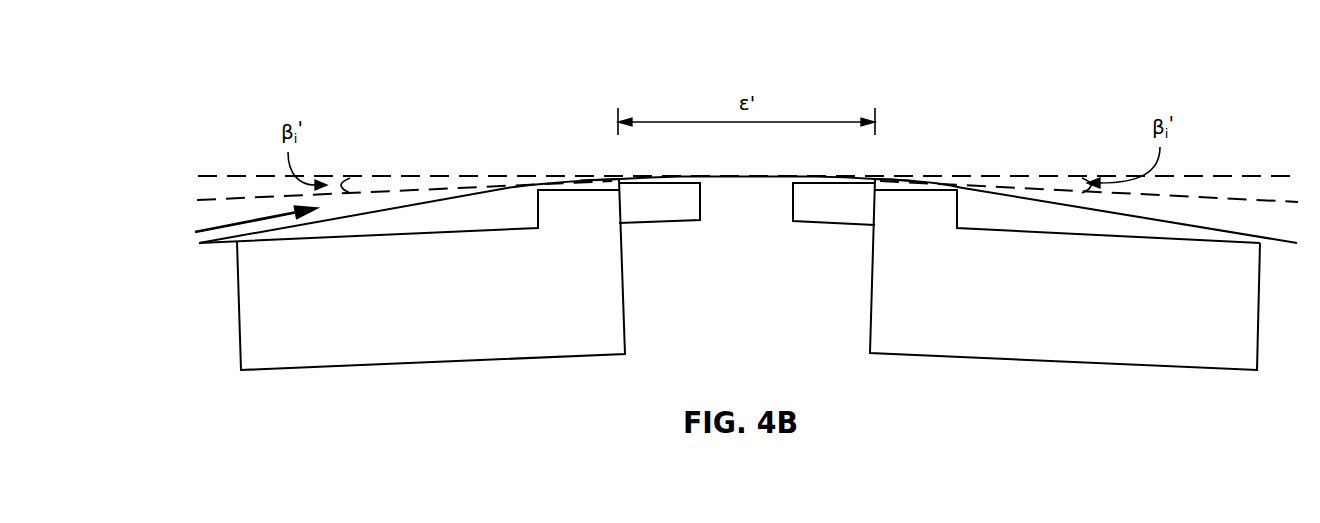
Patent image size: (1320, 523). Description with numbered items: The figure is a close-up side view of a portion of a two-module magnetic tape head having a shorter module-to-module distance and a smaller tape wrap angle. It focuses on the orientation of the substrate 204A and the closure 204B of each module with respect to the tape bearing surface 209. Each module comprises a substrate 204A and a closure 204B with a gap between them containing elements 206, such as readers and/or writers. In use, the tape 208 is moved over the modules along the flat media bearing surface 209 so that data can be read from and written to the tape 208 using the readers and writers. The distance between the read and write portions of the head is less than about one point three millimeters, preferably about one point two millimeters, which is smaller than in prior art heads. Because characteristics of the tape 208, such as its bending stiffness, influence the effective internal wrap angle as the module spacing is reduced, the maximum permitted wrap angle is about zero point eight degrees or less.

The substrate 204A is at (373, 313).
The closure 204B is at (670, 223).
The elements 206 is at (617, 165).
The tape 208 is at (437, 203).
The tape bearing surface 209 is at (592, 166).